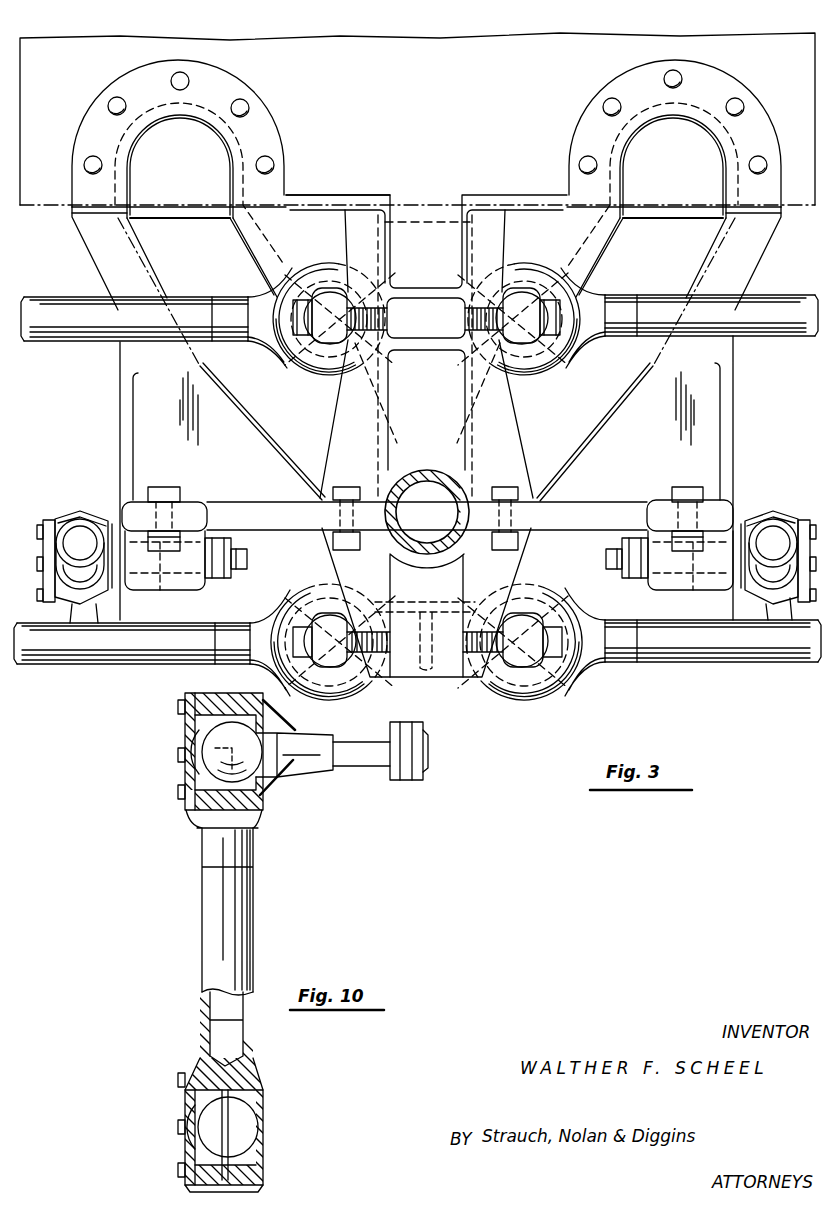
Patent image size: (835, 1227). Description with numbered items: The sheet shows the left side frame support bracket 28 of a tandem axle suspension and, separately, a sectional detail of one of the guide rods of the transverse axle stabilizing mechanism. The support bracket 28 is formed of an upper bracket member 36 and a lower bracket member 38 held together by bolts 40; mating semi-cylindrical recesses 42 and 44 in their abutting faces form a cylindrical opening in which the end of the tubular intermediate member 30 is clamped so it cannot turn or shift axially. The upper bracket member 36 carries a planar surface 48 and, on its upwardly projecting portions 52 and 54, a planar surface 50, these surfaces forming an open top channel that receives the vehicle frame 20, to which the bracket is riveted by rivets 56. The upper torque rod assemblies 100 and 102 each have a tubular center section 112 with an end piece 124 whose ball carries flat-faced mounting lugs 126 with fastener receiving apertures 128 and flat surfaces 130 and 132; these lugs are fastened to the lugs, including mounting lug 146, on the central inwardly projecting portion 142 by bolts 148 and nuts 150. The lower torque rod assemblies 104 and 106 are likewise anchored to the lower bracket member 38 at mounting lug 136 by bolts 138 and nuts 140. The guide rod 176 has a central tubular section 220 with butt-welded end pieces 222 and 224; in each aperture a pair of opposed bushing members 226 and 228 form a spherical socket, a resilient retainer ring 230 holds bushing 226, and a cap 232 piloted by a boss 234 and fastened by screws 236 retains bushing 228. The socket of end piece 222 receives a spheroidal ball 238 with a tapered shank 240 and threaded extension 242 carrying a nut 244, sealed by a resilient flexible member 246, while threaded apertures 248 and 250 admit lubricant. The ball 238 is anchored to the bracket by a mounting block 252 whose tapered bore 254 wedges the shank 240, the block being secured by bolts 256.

In FIG. 3, the vehicle frame 20 is at (122, 12).
In FIG. 3, the support bracket 28 is at (111, 380).
In FIG. 3, the intermediate member 30 is at (427, 512).
In FIG. 3, the upper bracket member 36 is at (125, 396).
In FIG. 3, the lower bracket member 38 is at (322, 557).
In FIG. 3, the bolts 40 is at (346, 487).
In FIG. 3, the semi-cylindrical recess 42 is at (430, 482).
In FIG. 3, the semi-cylindrical recess 44 is at (432, 566).
In FIG. 3, the planar surface 48 is at (192, 202).
In FIG. 3, the planar surface 50 is at (232, 86).
In FIG. 3, the upwardly projecting portion 52 is at (282, 128).
In FIG. 3, the upwardly projecting portion 54 is at (580, 94).
In FIG. 3, the rivets 56 is at (112, 100).
In FIG. 3, the torque rod assembly 100 is at (777, 345).
In FIG. 3, the torque rod assembly 102 is at (69, 347).
In FIG. 3, the torque rod assembly 104 is at (741, 673).
In FIG. 3, the torque rod assembly 106 is at (98, 660).
In FIG. 3, the tubular center section 112 is at (180, 297).
In FIG. 3, the end piece 124 is at (262, 290).
In FIG. 3, the mounting lugs 126 is at (304, 254).
In FIG. 3, the fastener receiving apertures 128 is at (294, 372).
In FIG. 3, the flat surface 130 is at (293, 358).
In FIG. 3, the flat surface 132 is at (340, 288).
In FIG. 3, the mounting lug 136 is at (374, 676).
In FIG. 3, the bolts 138 is at (425, 642).
In FIG. 3, the nuts 140 is at (280, 617).
In FIG. 3, the central inwardly projecting portion 142 is at (408, 212).
In FIG. 3, the mounting lug 146 is at (472, 276).
In FIG. 3, the bolts 148 is at (470, 321).
In FIG. 3, the nuts 150 is at (290, 342).
In FIG. 3, the rigid rod 176 is at (45, 583).
In FIG. 3, the central tubular section 220 is at (102, 502).
In FIG. 10, the central tubular section 220 is at (250, 882).
In FIG. 3, the end piece 222 is at (72, 606).
In FIG. 10, the end piece 222 is at (250, 850).
In FIG. 10, the end piece 224 is at (256, 1042).
In FIG. 10, the bushing member 226 is at (259, 816).
In FIG. 10, the bushing member 228 is at (196, 796).
In FIG. 10, the resilient retainer ring 230 is at (266, 798).
In FIG. 3, the cap 232 is at (70, 520).
In FIG. 10, the cap 232 is at (180, 720).
In FIG. 10, the boss 234 is at (205, 770).
In FIG. 3, the screws 236 is at (50, 521).
In FIG. 10, the screws 236 is at (178, 705).
In FIG. 10, the spheroidal ball 238 is at (218, 746).
In FIG. 3, the tapered shank 240 is at (182, 590).
In FIG. 10, the tapered shank 240 is at (311, 746).
In FIG. 3, the threaded extension 242 is at (247, 563).
In FIG. 10, the threaded extension 242 is at (376, 770).
In FIG. 3, the nut 244 is at (228, 552).
In FIG. 10, the nut 244 is at (428, 772).
In FIG. 10, the resilient flexible member 246 is at (272, 781).
In FIG. 10, the threaded aperture 248 is at (228, 695).
In FIG. 10, the threaded aperture 250 is at (240, 1190).
In FIG. 3, the mounting block 252 is at (212, 578).
In FIG. 3, the tapered bore 254 is at (200, 590).
In FIG. 3, the bolts 256 is at (186, 487).